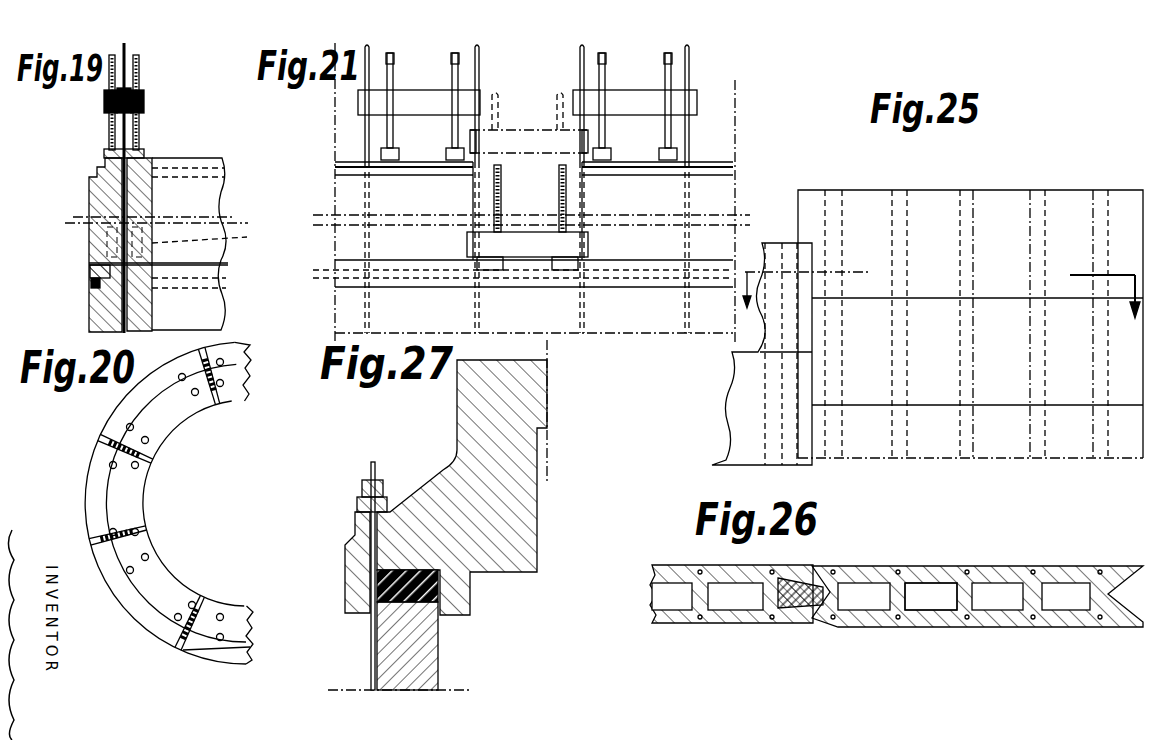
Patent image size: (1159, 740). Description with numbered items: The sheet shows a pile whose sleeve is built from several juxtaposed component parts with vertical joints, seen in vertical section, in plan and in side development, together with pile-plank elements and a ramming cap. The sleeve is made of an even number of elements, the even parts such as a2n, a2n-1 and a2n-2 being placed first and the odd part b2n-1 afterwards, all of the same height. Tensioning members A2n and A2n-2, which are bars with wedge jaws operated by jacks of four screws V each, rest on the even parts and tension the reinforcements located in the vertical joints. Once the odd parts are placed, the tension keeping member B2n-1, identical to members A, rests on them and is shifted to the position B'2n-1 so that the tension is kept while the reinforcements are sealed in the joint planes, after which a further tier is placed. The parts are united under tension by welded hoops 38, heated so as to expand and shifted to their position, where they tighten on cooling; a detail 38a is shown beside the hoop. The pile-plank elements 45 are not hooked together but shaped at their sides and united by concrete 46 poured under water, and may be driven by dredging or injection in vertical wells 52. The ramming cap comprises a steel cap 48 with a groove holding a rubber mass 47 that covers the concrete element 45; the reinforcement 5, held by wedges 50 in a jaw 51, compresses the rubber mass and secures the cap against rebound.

In FIG. 19, the screw V is at (145, 74).
In FIG. 20, the screw V is at (110, 465).
In FIG. 21, the screw V is at (394, 72).
In FIG. 19, the even sleeve component part a2n is at (150, 195).
In FIG. 20, the even sleeve component part a2n is at (112, 405).
In FIG. 21, the even sleeve component part a2n is at (404, 211).
In FIG. 21, the sleeve component part a2n-1 is at (657, 211).
In FIG. 20, the even sleeve component part a2n-2 is at (132, 613).
In FIG. 20, the tensioning member A2n is at (167, 413).
In FIG. 21, the tensioning member A2n is at (419, 102).
In FIG. 20, the tensioning member A2n-2 is at (155, 583).
In FIG. 21, the tensioning member A2n-2 is at (635, 102).
In FIG. 20, the tension keeping member B2n-1 is at (135, 507).
In FIG. 21, the tension keeping member B2n-1 is at (420, 217).
In FIG. 21, the shifted tension keeping member position B'2n-1 is at (529, 112).
In FIG. 20, the odd sleeve component part b2n-1 is at (90, 536).
In FIG. 19, the hoop 38 is at (93, 283).
In FIG. 21, the hoop 38 is at (335, 284).
In FIG. 19, the locking member part 38a is at (90, 272).
In FIG. 25, the concrete element 45 is at (937, 210).
In FIG. 26, the concrete element 45 is at (718, 612).
In FIG. 27, the concrete element 45 is at (425, 655).
In FIG. 26, the concrete 46 is at (795, 612).
In FIG. 27, the rubber mass 47 is at (377, 590).
In FIG. 27, the steel cap 48 is at (510, 535).
In FIG. 26, the reinforcement 5 is at (962, 578).
In FIG. 27, the reinforcement 5 is at (370, 633).
In FIG. 27, the wedges 50 is at (383, 478).
In FIG. 27, the jaw 51 is at (357, 503).
In FIG. 26, the vertical well 52 is at (940, 597).